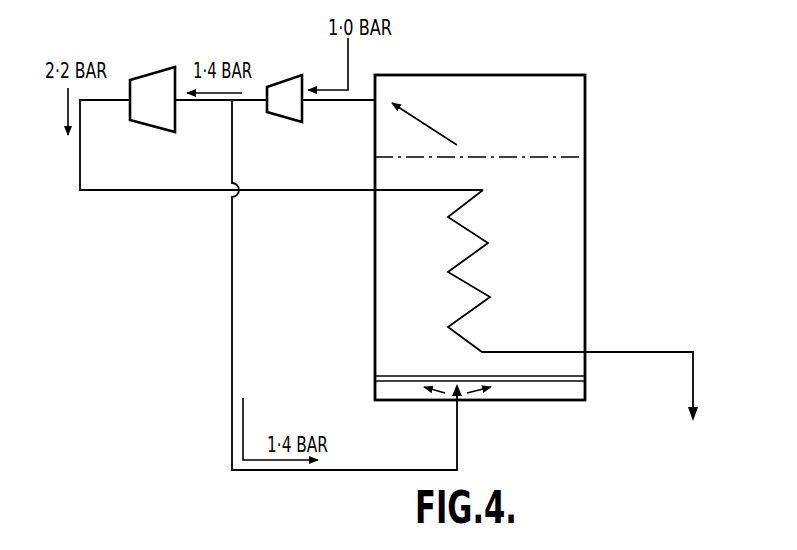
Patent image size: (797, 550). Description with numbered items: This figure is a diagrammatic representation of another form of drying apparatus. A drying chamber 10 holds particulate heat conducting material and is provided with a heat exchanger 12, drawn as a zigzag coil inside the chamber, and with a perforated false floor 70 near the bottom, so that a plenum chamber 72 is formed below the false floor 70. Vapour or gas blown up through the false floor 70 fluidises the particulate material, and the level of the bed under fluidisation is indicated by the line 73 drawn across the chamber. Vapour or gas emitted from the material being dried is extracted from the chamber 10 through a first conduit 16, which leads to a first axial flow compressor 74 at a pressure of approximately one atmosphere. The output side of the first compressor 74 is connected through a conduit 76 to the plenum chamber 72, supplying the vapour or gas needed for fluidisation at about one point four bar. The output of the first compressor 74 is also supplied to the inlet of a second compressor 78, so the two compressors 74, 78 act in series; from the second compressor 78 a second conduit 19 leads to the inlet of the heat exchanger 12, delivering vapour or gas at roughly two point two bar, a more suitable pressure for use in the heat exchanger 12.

The drying chamber 10 is at (585, 297).
The heat exchanger 12 is at (490, 298).
The first conduit 16 is at (360, 98).
The second conduit 19 is at (147, 192).
The perforated false floor 70 is at (543, 381).
The plenum chamber 72 is at (572, 390).
The level of the bed 73 is at (570, 157).
The first axial flow compressor 74 is at (286, 86).
The conduit 76 is at (232, 293).
The second compressor 78 is at (152, 83).